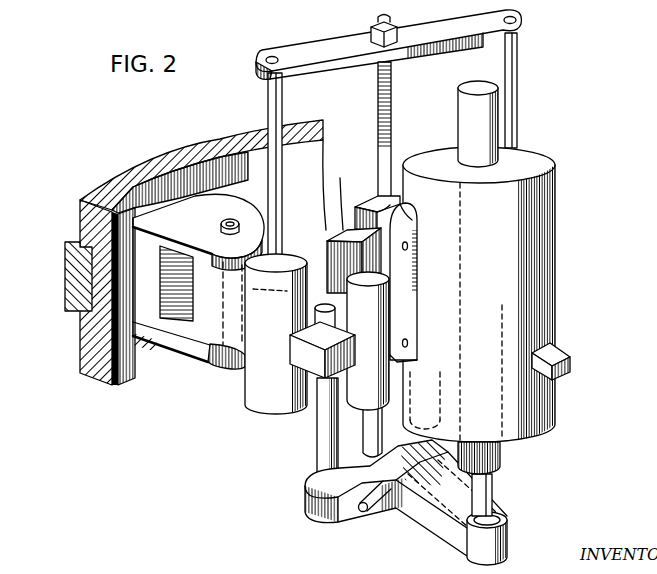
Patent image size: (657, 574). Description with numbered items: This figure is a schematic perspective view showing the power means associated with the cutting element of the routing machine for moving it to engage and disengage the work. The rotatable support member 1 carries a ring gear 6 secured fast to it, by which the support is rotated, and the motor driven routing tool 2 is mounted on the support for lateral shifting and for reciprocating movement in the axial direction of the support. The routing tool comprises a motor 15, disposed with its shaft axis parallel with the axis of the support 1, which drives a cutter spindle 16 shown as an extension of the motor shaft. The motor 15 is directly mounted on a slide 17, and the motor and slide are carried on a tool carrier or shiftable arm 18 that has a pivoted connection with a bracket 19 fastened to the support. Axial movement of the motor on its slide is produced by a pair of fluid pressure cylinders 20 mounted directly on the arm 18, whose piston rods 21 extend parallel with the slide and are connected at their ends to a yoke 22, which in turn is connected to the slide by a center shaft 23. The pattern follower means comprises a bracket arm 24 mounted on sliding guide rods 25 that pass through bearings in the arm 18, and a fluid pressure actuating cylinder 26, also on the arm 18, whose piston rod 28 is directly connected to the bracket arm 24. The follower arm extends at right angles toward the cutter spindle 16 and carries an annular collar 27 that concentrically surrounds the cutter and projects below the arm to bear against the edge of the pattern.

The rotatable support member 1 is at (130, 170).
The motor driven routing tool 2 is at (548, 165).
The ring gear 6 is at (68, 273).
The motor 15 is at (556, 300).
The cutter spindle 16 is at (492, 494).
The slide 17 is at (402, 203).
The tool carrier or shiftable arm 18 is at (343, 230).
The bracket 19 is at (182, 342).
The fluid pressure cylinders 20 is at (262, 392).
The piston rods 21 is at (267, 103).
The yoke 22 is at (322, 43).
The center shaft 23 is at (392, 97).
The bracket arm 24 is at (398, 510).
The sliding guide rods 25 is at (323, 441).
The fluid pressure actuating cylinder 26 is at (361, 393).
The annular collar 27 is at (500, 556).
The piston rod 28 is at (378, 394).